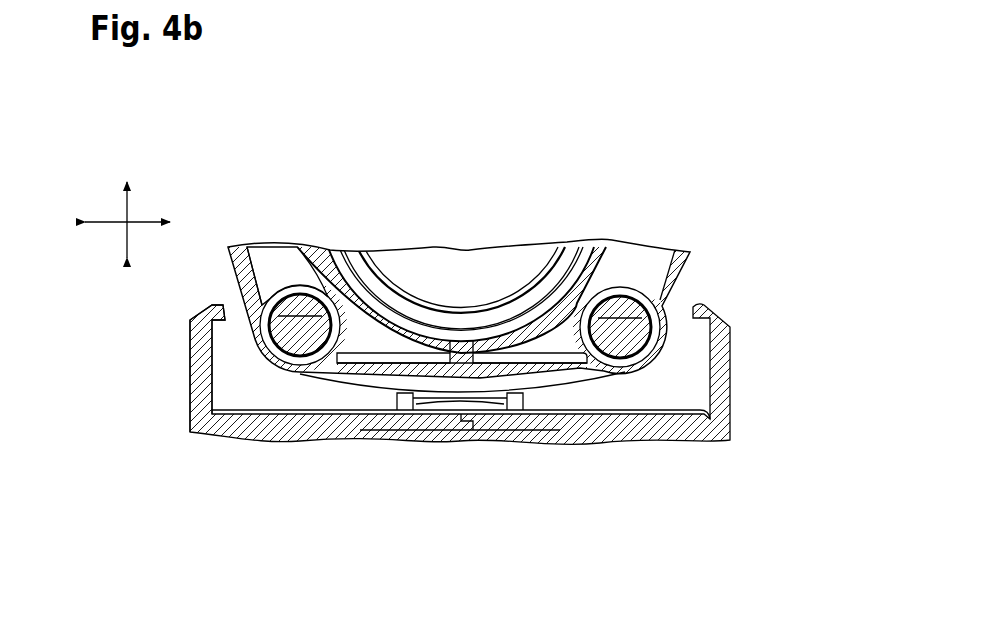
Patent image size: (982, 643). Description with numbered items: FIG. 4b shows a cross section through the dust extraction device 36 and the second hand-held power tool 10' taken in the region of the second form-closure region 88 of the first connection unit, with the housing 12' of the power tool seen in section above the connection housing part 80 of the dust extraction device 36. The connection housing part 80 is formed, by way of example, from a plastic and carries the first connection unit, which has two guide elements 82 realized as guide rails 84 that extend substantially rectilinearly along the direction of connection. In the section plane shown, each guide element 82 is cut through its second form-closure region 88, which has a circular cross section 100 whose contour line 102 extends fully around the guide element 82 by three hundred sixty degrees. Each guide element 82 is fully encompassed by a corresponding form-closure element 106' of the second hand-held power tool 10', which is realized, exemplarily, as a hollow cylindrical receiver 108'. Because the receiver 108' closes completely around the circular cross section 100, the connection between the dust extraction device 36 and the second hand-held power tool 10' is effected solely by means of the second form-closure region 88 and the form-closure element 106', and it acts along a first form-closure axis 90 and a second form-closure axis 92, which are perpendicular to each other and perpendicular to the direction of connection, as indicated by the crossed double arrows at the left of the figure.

The second hand-held power tool 10' is at (507, 232).
The housing 12' is at (507, 274).
The dust extraction device 36 is at (168, 378).
The connection housing part 80 is at (442, 374).
The guide element 82 is at (465, 402).
The guide rail 84 is at (465, 402).
The second form-closure region 88 is at (305, 340).
The first form-closure axis 90 is at (125, 202).
The second form-closure axis 92 is at (105, 225).
The circular cross section 100 is at (333, 287).
The contour line 102 is at (278, 283).
The corresponding form-closure element 106' is at (544, 268).
The hollow cylindrical receiver 108' is at (544, 268).